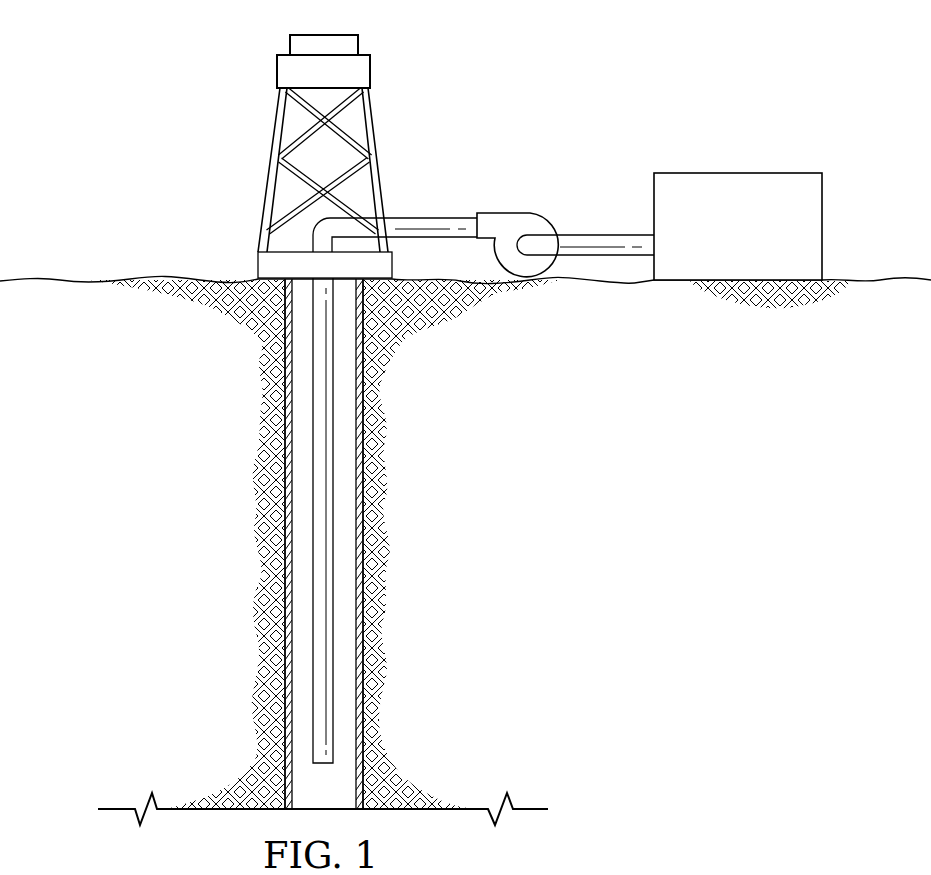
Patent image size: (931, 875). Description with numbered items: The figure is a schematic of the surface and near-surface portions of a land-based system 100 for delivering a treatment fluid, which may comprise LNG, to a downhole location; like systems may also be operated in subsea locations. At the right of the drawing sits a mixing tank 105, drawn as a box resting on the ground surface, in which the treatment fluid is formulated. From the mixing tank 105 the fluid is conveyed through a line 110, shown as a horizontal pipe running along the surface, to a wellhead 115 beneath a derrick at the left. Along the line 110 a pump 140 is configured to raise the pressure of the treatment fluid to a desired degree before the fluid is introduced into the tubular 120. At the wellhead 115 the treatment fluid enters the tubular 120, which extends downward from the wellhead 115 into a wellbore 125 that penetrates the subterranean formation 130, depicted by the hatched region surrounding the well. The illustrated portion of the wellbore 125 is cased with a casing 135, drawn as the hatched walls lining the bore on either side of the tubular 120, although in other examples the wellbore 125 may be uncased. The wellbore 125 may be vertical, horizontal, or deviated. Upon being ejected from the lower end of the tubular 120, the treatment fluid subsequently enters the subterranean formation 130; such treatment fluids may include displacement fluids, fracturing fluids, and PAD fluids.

The system 100 is at (208, 66).
The mixing tank 105 is at (738, 173).
The line 110 is at (430, 217).
The wellhead 115 is at (258, 268).
The tubular 120 is at (313, 672).
The wellbore 125 is at (363, 405).
The subterranean formation 130 is at (228, 534).
The casing 135 is at (368, 464).
The pump 140 is at (500, 213).